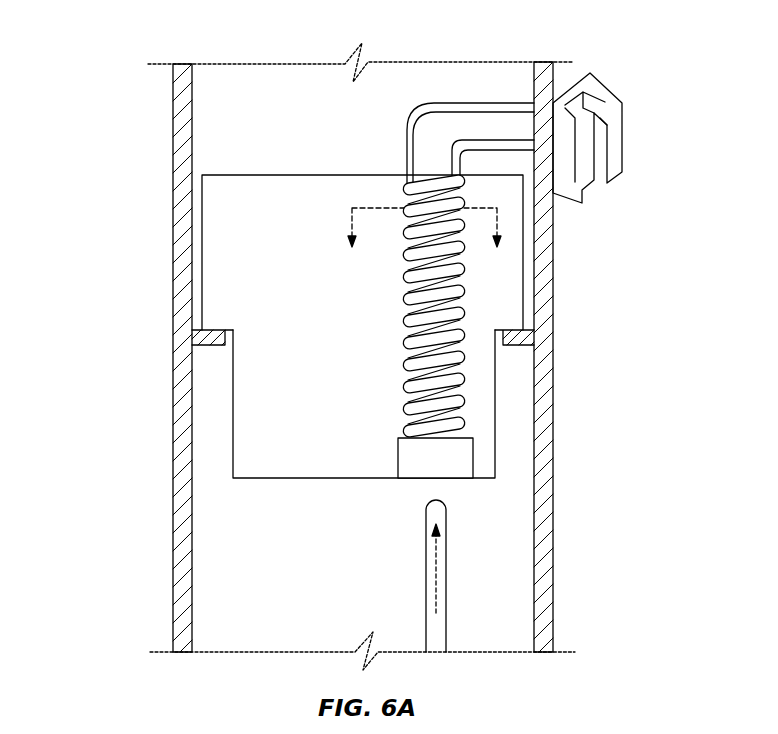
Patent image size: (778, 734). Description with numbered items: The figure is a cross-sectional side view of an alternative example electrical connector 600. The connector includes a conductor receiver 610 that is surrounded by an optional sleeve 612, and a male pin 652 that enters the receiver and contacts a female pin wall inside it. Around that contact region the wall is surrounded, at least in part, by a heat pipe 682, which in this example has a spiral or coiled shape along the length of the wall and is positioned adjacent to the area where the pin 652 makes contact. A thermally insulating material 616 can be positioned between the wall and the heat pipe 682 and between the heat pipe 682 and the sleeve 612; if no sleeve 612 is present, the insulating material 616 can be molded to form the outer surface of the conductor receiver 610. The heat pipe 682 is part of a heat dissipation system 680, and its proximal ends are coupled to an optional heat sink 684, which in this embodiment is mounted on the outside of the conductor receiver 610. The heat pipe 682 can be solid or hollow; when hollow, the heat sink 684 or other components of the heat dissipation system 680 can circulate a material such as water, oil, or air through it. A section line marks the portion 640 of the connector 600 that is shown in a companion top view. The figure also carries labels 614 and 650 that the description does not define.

The electrical connector 600 is at (140, 40).
The conductor receiver 610 is at (330, 172).
The sleeve 612 is at (545, 405).
The flange 614 is at (197, 338).
The thermally insulating material 616 is at (258, 207).
The portion 640 is at (372, 206).
The gas flow 650 is at (415, 538).
The pin 652 is at (448, 565).
The heat dissipation system 680 is at (627, 198).
The heat pipe 682 is at (403, 318).
The heat sink 684 is at (624, 138).